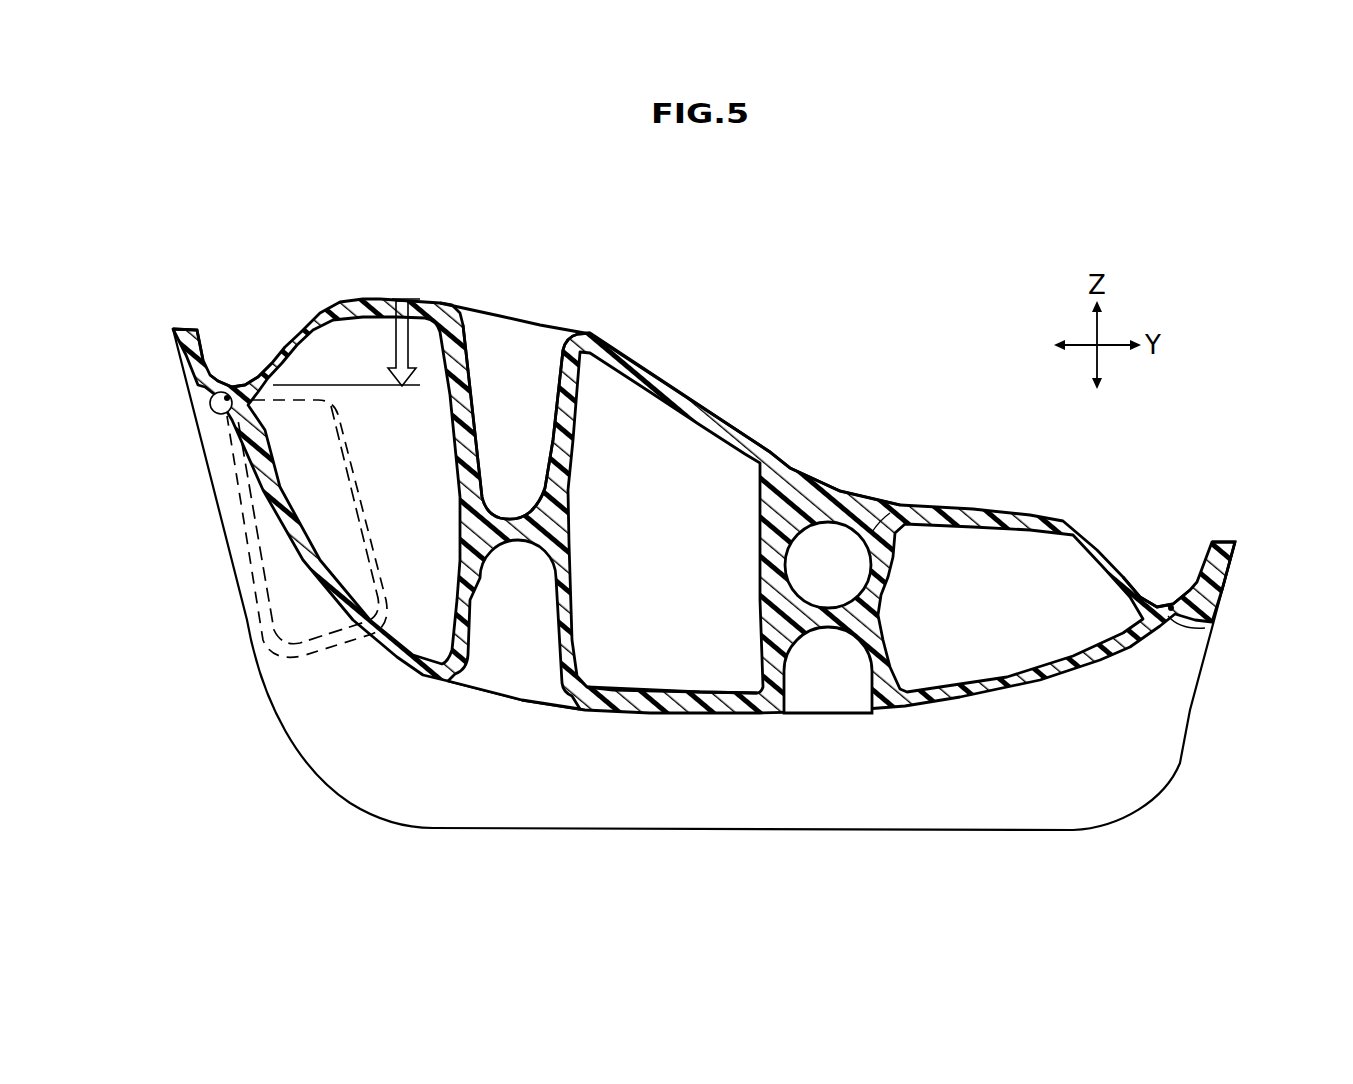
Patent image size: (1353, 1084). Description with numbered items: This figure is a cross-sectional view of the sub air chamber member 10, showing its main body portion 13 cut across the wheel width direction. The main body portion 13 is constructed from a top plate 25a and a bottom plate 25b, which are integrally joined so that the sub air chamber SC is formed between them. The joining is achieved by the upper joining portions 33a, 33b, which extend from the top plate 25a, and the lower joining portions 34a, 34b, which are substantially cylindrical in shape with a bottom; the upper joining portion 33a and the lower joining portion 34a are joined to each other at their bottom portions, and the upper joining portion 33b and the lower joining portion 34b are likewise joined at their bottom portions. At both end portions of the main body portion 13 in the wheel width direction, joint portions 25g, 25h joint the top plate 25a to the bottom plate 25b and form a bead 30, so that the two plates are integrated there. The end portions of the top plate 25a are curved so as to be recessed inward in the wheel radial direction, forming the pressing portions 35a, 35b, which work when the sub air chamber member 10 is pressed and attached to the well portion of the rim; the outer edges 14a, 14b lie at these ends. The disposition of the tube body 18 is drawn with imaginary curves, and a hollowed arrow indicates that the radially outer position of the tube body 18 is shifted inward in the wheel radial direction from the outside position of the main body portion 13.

The sub air chamber member 10 is at (863, 312).
The main body portion 13 is at (682, 380).
The flange portion 14a is at (1228, 560).
The flange portion 14b is at (187, 356).
The tube body 18 is at (372, 490).
The top plate 25a is at (590, 338).
The bottom plate 25b is at (673, 715).
The joint portion 25g is at (1173, 612).
The joint portion 25h is at (216, 412).
The bead 30 is at (375, 775).
The upper joining portion 33a is at (468, 378).
The upper joining portion 33b is at (862, 540).
The lower joining portion 34a is at (477, 622).
The lower joining portion 34b is at (873, 668).
The pressing portion 35a is at (1169, 566).
The pressing portion 35b is at (233, 354).
The sub air chamber SC is at (646, 551).